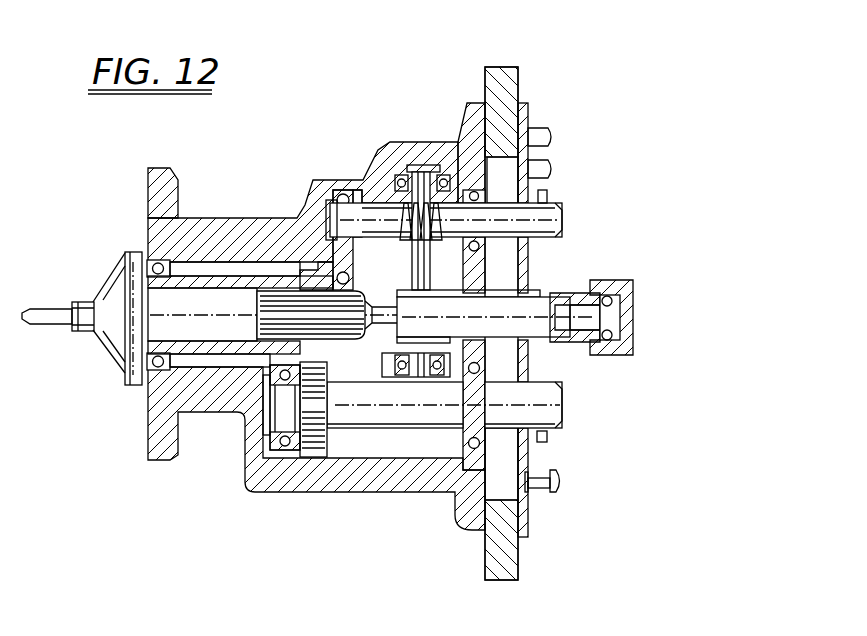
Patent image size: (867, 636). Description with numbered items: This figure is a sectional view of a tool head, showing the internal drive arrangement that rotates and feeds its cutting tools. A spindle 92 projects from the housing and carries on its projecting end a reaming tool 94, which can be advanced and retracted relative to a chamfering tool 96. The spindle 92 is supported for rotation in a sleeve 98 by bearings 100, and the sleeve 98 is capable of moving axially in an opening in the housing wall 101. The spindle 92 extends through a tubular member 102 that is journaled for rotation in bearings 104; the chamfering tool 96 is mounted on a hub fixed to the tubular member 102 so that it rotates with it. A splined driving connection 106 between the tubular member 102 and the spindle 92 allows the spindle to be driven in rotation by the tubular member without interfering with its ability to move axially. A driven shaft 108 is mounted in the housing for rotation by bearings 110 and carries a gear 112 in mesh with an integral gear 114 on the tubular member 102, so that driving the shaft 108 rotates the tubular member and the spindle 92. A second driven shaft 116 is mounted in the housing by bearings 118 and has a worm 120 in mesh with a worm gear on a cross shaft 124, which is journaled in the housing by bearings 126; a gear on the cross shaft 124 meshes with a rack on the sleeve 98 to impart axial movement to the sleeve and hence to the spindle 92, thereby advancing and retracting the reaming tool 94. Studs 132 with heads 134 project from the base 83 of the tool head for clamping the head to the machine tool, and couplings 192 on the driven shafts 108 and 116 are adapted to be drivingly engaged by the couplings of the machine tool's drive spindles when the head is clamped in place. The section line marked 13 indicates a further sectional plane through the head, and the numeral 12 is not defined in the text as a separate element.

The coupling nut 12 is at (75, 332).
The section line 13 is at (428, 130).
The base 83 is at (520, 76).
The spindle 92 is at (217, 320).
The reaming tool 94 is at (36, 307).
The chamfering tool 96 is at (110, 360).
The sleeve 98 is at (577, 343).
The bearings 100 is at (620, 290).
The housing wall 101 is at (483, 287).
The tubular member 102 is at (253, 262).
The bearings 104 is at (152, 266).
The splined driving connection 106 is at (245, 262).
The driven shaft 108 is at (375, 423).
The bearings 110 is at (243, 472).
The gear 112 is at (322, 453).
The integral gear 114 is at (303, 260).
The second driven shaft 116 is at (552, 205).
The bearings 118 is at (336, 195).
The worm 120 is at (407, 240).
The cross shaft 124 is at (462, 190).
The bearings 126 is at (452, 173).
The studs 132 is at (538, 493).
The heads 134 is at (558, 482).
The couplings 192 is at (553, 193).